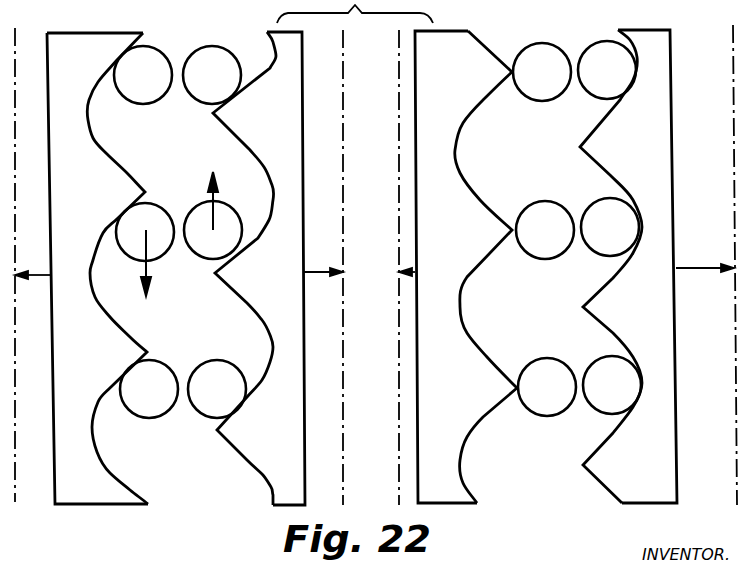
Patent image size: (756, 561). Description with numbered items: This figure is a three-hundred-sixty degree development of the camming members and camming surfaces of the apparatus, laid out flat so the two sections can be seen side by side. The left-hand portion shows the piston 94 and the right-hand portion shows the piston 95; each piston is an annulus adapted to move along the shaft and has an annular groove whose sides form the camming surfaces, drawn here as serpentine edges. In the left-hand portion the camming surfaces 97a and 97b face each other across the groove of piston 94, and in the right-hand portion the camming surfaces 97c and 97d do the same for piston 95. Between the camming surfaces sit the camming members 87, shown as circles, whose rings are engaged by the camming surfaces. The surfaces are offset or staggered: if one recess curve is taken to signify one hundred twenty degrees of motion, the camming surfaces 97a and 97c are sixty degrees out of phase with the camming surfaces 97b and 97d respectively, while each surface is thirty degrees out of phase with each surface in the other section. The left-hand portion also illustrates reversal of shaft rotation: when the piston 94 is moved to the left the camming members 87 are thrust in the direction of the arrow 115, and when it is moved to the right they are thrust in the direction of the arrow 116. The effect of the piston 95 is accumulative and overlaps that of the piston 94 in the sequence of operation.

The piston 94 is at (176, 255).
The piston 95 is at (546, 253).
The camming surface 97a is at (91, 131).
The camming surface 97b is at (250, 151).
The camming surface 97c is at (460, 163).
The camming surface 97d is at (616, 183).
The camming member 87 is at (207, 253).
The arrow 115 is at (215, 192).
The arrow 116 is at (142, 270).